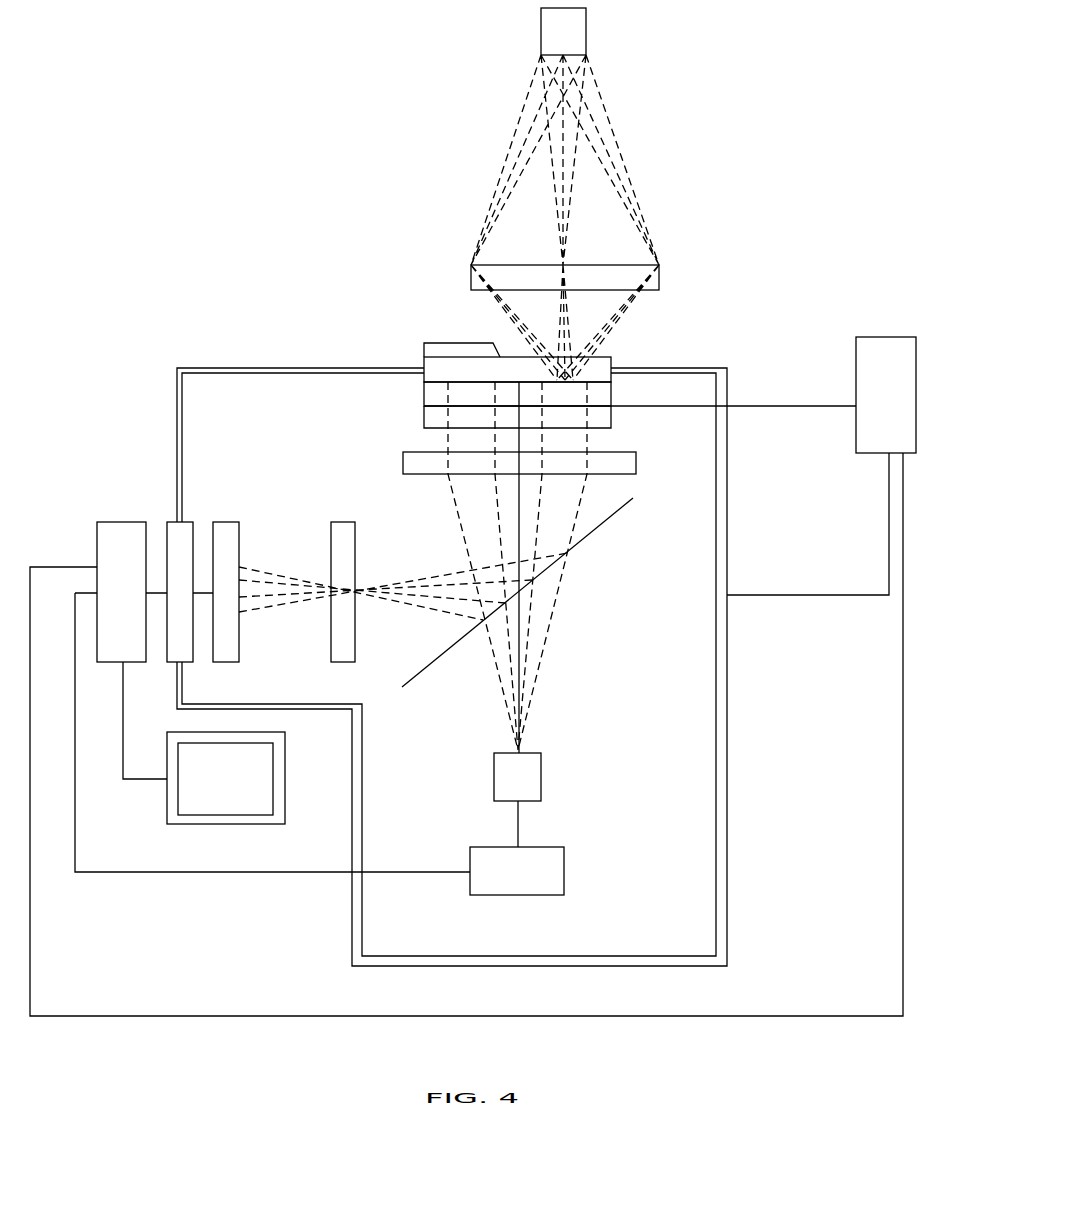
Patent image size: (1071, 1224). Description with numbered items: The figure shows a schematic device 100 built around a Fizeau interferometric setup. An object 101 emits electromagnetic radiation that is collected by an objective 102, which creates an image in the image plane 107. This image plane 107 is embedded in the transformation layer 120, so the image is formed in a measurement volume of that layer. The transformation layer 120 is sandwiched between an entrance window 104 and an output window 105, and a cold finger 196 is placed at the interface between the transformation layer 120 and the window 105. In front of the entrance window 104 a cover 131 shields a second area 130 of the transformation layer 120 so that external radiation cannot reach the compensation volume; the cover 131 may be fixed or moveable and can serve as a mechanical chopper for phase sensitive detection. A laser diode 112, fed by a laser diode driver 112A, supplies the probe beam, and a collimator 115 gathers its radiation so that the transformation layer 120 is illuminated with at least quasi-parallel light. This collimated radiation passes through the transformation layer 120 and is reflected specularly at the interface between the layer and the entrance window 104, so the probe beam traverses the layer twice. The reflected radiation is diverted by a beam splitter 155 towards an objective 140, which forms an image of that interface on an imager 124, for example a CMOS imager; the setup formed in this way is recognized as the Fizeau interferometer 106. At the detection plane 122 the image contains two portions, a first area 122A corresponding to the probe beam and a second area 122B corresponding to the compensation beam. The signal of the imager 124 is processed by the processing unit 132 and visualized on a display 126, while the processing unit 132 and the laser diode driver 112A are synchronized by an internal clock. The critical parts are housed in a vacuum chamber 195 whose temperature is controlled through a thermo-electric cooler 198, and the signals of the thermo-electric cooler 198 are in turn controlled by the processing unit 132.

The optical inspection system 100 is at (326, 190).
The object 101 is at (571, 35).
The objective 102 is at (634, 276).
The entrance window 104 is at (596, 369).
The output window 105 is at (599, 413).
The Fizeau interferometer 106 is at (653, 651).
The image plane 107 is at (598, 386).
The laser diode 112 is at (524, 787).
The laser diode driver 112A is at (548, 873).
The collimator 115 is at (657, 474).
The transformation layer 120 is at (437, 396).
The detection plane 122 is at (226, 646).
The first area 122A is at (227, 601).
The second area 122B is at (227, 567).
The imager 124 is at (180, 544).
The display 126 is at (255, 795).
The second area 130 is at (440, 381).
The cover 131 is at (455, 352).
The processing unit 132 is at (123, 544).
The objective 140 is at (343, 646).
The beam splitter 155 is at (600, 530).
The vacuum chamber 195 is at (722, 784).
The cold finger 196 is at (560, 408).
The thermo-electric cooler 198 is at (903, 377).